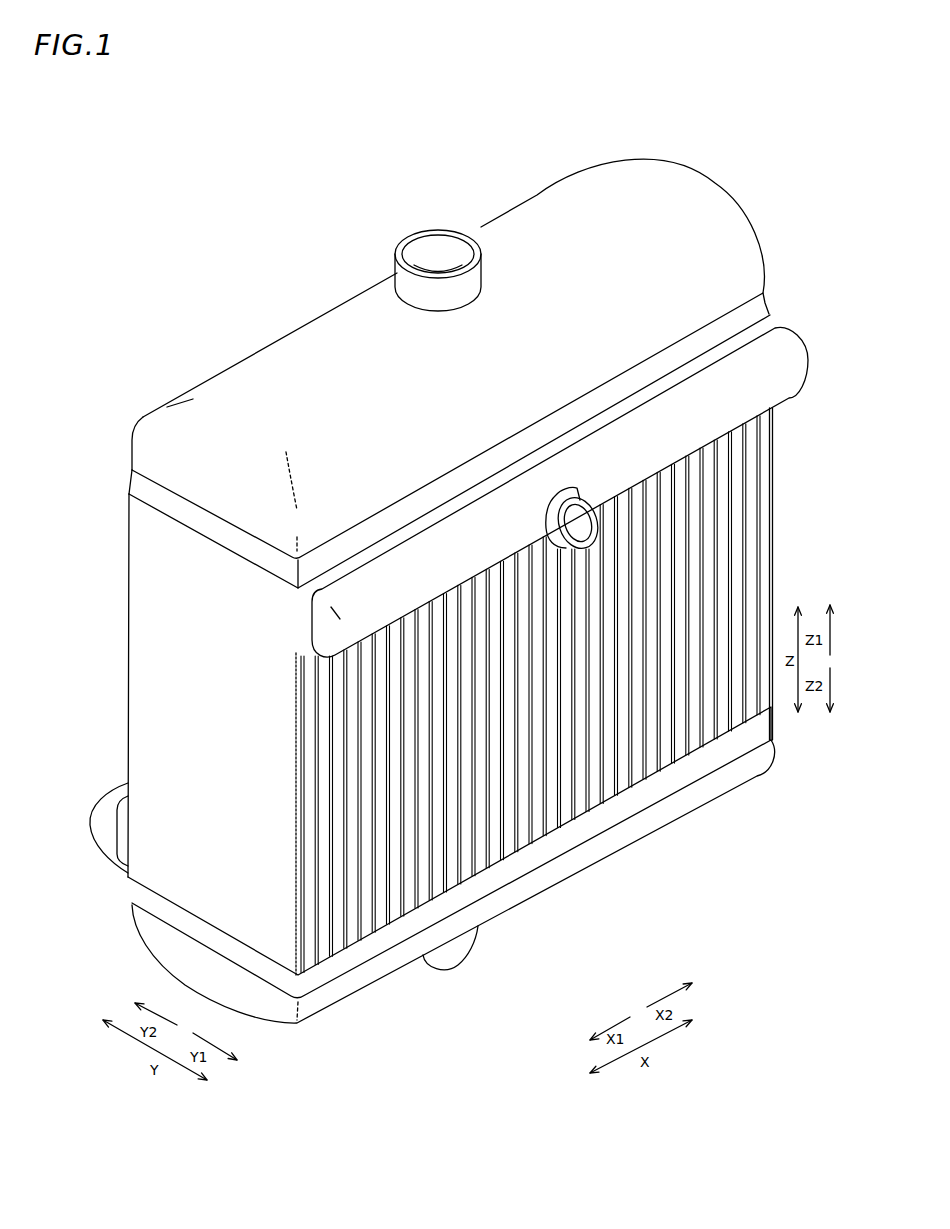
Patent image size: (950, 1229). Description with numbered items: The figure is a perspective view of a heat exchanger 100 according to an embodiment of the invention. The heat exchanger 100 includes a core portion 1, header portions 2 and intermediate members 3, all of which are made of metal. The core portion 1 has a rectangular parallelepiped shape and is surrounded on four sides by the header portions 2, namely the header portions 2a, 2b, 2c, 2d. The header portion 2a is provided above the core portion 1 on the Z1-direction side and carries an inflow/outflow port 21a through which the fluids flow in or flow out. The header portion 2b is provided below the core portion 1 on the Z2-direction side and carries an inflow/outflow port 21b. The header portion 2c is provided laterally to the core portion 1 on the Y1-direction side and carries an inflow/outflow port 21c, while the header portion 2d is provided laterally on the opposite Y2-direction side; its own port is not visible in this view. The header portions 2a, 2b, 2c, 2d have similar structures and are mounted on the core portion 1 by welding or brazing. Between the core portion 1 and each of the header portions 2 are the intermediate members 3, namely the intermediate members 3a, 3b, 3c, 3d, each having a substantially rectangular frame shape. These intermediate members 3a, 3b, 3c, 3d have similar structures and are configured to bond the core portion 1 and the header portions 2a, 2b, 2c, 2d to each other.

The heat exchanger 100 is at (262, 284).
The core portion 1 is at (760, 590).
The header portions 2 is at (451, 591).
The header portion 2a is at (722, 213).
The header portion 2b is at (612, 843).
The header portion 2c is at (782, 363).
The header portion 2d is at (103, 820).
The intermediate members 3 is at (466, 621).
The intermediate member 3a is at (755, 312).
The intermediate member 3b is at (747, 730).
The intermediate member 3c is at (763, 330).
The intermediate member 3d is at (118, 855).
The inflow/outflow port 21a is at (431, 248).
The inflow/outflow port 21b is at (461, 952).
The inflow/outflow port 21c is at (570, 500).